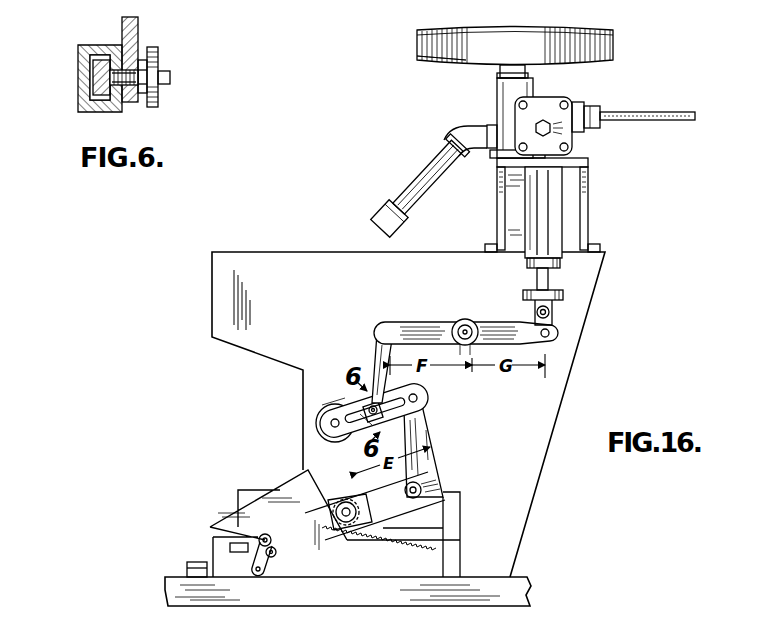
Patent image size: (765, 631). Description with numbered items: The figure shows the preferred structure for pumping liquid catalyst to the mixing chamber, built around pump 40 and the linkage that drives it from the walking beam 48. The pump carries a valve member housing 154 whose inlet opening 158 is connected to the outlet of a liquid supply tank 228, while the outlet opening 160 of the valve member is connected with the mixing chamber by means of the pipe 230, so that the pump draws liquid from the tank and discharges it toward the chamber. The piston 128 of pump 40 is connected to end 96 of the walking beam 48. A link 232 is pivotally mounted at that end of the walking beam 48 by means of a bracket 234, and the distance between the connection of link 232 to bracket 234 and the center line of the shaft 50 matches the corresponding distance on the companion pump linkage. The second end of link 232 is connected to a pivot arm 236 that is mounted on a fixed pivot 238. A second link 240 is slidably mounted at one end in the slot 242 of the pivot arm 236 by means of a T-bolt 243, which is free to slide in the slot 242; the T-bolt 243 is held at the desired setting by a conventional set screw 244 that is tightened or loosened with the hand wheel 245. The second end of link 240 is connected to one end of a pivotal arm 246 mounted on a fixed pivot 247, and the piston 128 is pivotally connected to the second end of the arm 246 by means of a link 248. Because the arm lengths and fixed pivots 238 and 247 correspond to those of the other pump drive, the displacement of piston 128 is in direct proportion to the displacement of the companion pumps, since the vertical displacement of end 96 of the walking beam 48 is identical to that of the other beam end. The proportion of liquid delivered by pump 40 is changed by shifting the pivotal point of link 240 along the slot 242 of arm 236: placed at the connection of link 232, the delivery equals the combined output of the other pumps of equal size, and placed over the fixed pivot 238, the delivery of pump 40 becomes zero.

In FIG. 16, the pump 40 is at (563, 250).
In FIG. 16, the walking beam 48 is at (347, 540).
In FIG. 16, the shaft 50 is at (340, 500).
In FIG. 16, the end of the walking beam 96 is at (430, 478).
In FIG. 16, the piston 128 is at (549, 290).
In FIG. 16, the gear housing 154 is at (536, 102).
In FIG. 16, the inlet opening 158 is at (498, 72).
In FIG. 16, the outlet opening 160 is at (590, 103).
In FIG. 16, the liquid supply tank 228 is at (541, 33).
In FIG. 16, the pipe 230 is at (655, 111).
In FIG. 16, the link 232 is at (422, 435).
In FIG. 16, the bracket 234 is at (421, 491).
In FIG. 6, the pivot arm 236 is at (80, 47).
In FIG. 16, the pivot arm 236 is at (330, 414).
In FIG. 16, the fixed pivot 238 is at (333, 432).
In FIG. 6, the link 240 is at (138, 29).
In FIG. 16, the link 240 is at (377, 349).
In FIG. 16, the slot 242 is at (428, 400).
In FIG. 6, the T-bolt 243 is at (100, 100).
In FIG. 16, the T-bolt 243 is at (414, 399).
In FIG. 6, the set screw 244 is at (160, 78).
In FIG. 16, the set screw 244 is at (367, 428).
In FIG. 6, the hand wheel 245 is at (158, 101).
In FIG. 16, the hand wheel 245 is at (366, 406).
In FIG. 16, the pivotal arm 246 is at (420, 325).
In FIG. 16, the fixed pivot 247 is at (466, 320).
In FIG. 16, the link 248 is at (549, 312).